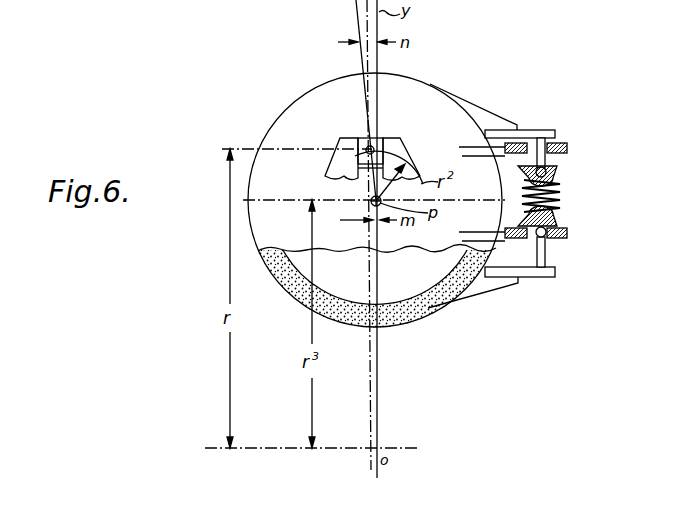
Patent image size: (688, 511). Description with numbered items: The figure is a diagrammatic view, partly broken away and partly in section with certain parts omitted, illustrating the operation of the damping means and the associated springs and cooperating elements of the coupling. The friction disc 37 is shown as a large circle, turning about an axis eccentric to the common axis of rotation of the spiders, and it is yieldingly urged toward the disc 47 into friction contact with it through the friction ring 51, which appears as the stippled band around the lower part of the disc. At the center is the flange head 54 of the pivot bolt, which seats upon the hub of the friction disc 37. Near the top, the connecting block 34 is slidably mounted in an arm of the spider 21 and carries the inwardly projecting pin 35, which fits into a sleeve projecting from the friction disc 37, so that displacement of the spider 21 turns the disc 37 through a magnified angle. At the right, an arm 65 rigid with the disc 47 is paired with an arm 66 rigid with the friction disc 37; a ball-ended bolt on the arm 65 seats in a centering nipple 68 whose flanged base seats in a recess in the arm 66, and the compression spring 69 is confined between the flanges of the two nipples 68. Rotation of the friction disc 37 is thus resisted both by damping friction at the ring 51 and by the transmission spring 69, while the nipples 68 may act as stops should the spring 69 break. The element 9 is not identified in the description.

The pin 9 is at (367, 147).
The spider 21 is at (399, 146).
The connecting block 34 is at (380, 136).
The pin 35 is at (354, 153).
The friction disc 37 is at (296, 110).
The disc 47 is at (433, 278).
The friction ring 51 is at (402, 320).
The flange head 54 is at (371, 198).
The arms 65 is at (507, 130).
The arms 66 is at (567, 148).
The centering nipples 68 is at (559, 176).
The compression spring 69 is at (520, 197).